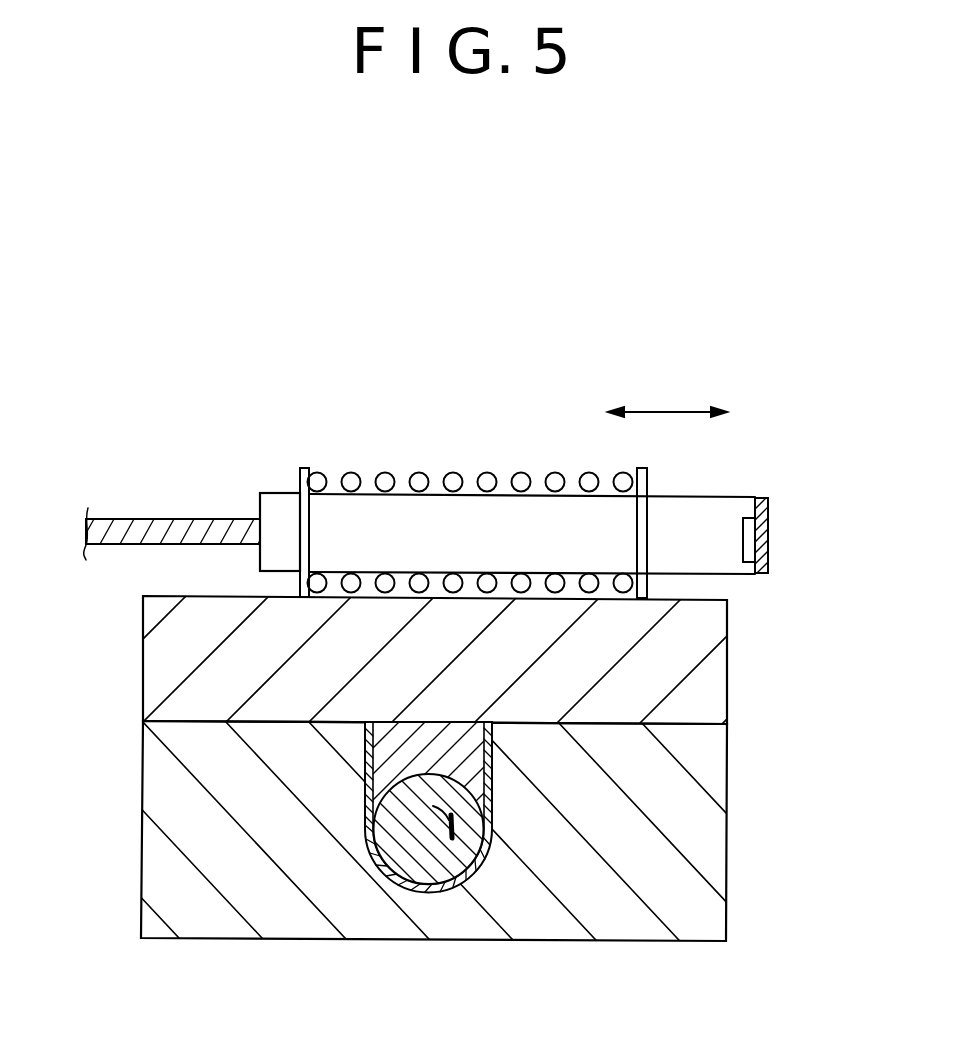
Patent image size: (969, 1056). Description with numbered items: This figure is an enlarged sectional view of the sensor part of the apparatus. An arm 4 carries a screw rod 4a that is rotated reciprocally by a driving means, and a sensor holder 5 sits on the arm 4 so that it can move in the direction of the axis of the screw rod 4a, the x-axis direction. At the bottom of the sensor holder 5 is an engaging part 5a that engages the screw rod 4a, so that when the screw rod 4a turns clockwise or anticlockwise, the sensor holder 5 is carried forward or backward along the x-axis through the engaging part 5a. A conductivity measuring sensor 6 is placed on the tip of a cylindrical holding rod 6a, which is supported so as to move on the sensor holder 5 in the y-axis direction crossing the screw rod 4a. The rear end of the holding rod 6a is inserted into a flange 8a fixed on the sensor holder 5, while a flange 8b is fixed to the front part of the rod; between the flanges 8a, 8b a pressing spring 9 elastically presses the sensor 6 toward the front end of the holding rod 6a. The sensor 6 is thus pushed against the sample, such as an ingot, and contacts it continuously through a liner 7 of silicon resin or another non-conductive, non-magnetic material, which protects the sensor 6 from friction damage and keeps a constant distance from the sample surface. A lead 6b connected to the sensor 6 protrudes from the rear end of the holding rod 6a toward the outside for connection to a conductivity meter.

The arm 4 is at (168, 844).
The screw rod 4a is at (458, 878).
The sensor holder 5 is at (161, 666).
The engaging part 5a is at (366, 757).
The conductivity measuring sensor 6 is at (745, 535).
The cylindrical holding rod 6a is at (725, 497).
The lead 6b is at (134, 524).
The liner 7 is at (768, 538).
The flange 8a is at (300, 471).
The flange 8b is at (637, 468).
The pressing spring 9 is at (347, 473).